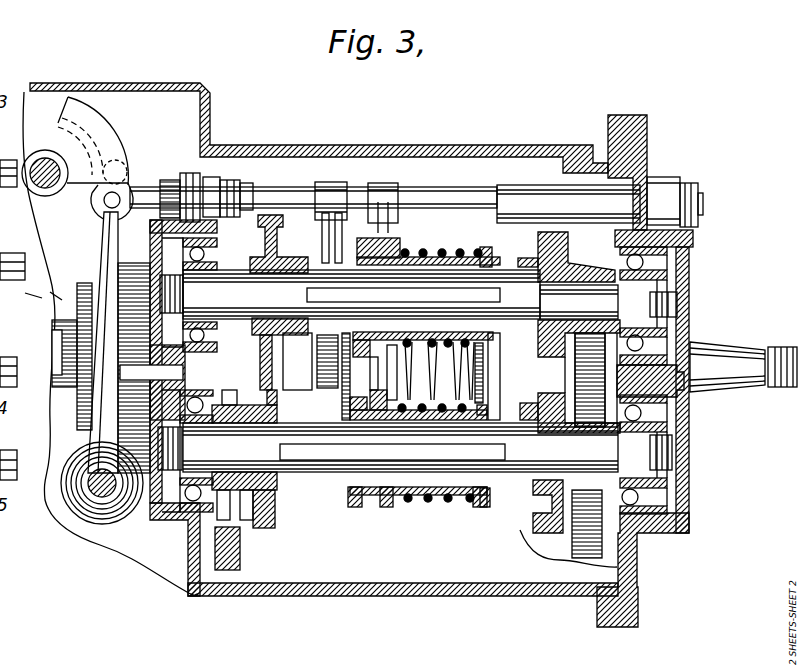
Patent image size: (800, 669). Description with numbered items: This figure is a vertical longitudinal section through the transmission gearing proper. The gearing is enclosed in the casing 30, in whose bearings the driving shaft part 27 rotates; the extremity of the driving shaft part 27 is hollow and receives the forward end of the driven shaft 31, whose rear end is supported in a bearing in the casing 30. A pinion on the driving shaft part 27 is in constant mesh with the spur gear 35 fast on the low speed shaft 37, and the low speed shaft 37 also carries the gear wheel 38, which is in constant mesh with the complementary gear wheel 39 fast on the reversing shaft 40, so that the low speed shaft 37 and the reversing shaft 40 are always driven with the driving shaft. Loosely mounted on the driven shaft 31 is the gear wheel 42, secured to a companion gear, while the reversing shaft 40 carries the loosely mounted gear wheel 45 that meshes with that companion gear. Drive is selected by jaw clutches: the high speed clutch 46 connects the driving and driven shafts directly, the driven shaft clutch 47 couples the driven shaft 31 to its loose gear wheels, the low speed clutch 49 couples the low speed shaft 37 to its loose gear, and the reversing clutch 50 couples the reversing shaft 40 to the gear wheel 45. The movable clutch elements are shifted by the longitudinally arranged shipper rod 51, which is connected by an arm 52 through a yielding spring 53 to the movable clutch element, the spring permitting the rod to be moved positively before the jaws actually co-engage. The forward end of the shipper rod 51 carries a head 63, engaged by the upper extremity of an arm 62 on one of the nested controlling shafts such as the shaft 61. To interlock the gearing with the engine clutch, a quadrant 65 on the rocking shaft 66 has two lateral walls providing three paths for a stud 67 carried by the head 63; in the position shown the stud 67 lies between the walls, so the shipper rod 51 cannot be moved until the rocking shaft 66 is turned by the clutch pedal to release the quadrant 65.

The driving shaft part 27 is at (56, 341).
The casing 30 is at (358, 355).
The driven shaft 31 is at (46, 289).
The spur gear 35 is at (240, 558).
The low speed shaft 37 is at (415, 447).
The gear wheel 38 is at (276, 512).
The complementary gear wheel 39 is at (280, 236).
The reversing shaft 40 is at (418, 294).
The gear wheel 42 is at (26, 305).
The gear wheel 45 is at (566, 243).
The high speed clutch 46 is at (299, 361).
The driven shaft clutch 47 is at (440, 376).
The low speed clutch 49 is at (541, 519).
The reversing clutch 50 is at (547, 257).
The shipper rod 51 is at (433, 196).
The arm 52 is at (378, 239).
The yielding spring 53 is at (462, 250).
The nested shaft 61 is at (82, 496).
The arm 62 is at (108, 248).
The head 63 is at (97, 195).
The quadrant 65 is at (118, 127).
The rocking shaft 66 is at (56, 124).
The stud 67 is at (130, 169).